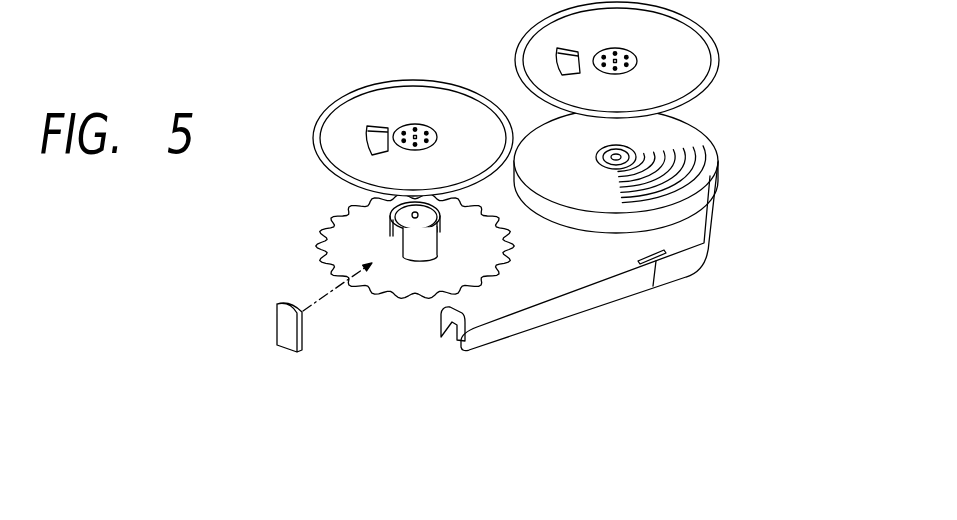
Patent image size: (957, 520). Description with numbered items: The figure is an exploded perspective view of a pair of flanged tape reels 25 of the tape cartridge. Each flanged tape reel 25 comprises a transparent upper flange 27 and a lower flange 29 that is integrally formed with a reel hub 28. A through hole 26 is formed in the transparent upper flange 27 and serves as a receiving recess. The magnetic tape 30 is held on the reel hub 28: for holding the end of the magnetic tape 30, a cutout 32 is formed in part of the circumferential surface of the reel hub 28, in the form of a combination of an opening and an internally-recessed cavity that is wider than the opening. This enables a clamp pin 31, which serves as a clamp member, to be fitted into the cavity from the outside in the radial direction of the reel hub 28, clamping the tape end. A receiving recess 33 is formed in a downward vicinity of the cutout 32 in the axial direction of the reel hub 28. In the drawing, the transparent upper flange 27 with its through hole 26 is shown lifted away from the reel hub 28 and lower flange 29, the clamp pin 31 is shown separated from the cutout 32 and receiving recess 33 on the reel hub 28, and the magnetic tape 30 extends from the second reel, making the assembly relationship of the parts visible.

The flanged tape reel 25 is at (748, 105).
The through hole 26 is at (380, 132).
The transparent upper flange 27 is at (677, 58).
The reel hub 28 is at (453, 288).
The lower flange 29 is at (353, 219).
The magnetic tape 30 is at (712, 233).
The clamp pin 31 is at (288, 343).
The cutout 32 is at (388, 243).
The receiving recess 33 is at (400, 262).